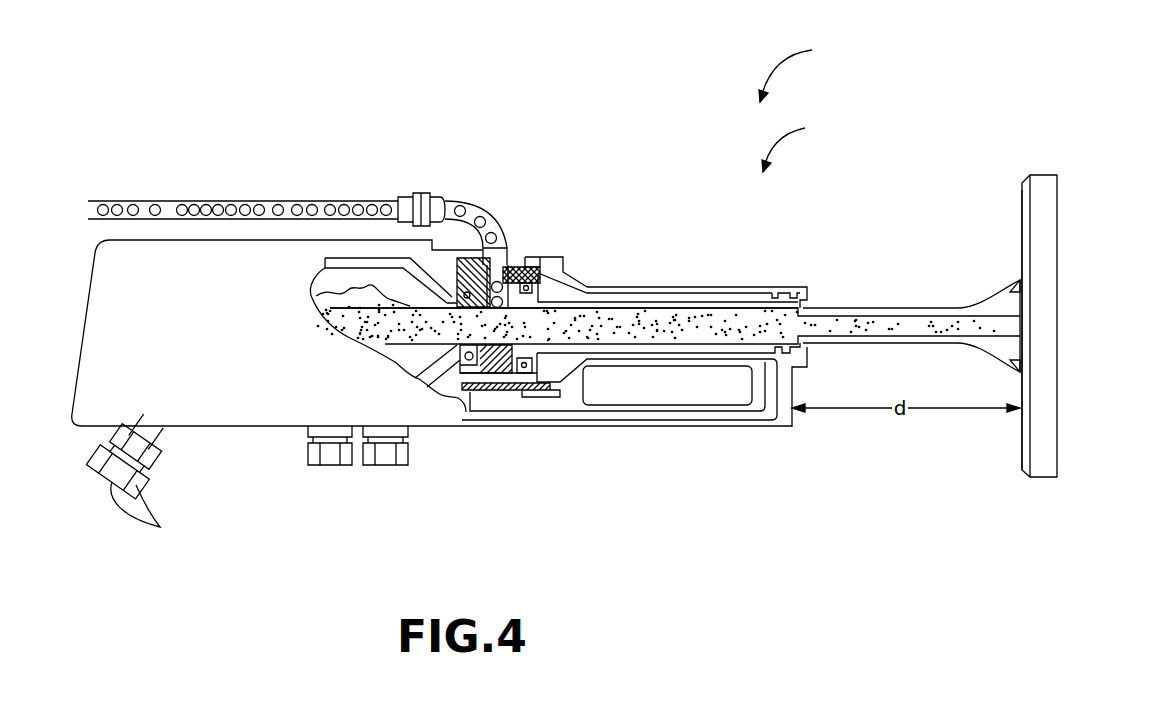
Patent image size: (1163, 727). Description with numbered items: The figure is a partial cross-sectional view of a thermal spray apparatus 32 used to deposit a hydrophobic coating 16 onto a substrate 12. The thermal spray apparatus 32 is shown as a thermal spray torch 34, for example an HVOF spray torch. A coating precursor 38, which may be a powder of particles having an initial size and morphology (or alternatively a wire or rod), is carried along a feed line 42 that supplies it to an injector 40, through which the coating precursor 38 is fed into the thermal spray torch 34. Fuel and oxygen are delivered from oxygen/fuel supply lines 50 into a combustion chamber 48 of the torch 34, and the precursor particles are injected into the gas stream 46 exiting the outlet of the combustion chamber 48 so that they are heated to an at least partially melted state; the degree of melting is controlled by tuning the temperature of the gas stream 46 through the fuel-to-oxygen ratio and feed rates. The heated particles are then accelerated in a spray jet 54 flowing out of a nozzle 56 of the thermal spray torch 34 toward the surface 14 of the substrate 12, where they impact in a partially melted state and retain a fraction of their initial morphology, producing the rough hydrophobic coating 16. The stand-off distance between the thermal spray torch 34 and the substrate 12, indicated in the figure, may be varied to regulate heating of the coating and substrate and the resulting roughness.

The substrate 12 is at (1057, 181).
The surface 14 is at (1026, 217).
The hydrophobic coating 16 is at (1022, 292).
The thermal spray apparatus 32 is at (798, 68).
The thermal spray torch 34 is at (796, 144).
The coating precursor 38 is at (155, 202).
The injector 40 is at (527, 280).
The feed line 42 is at (310, 202).
The gas stream 46 is at (435, 318).
The combustion chamber 48 is at (407, 348).
The oxygen/fuel supply lines 50 is at (135, 478).
The spray jet 54 is at (828, 315).
The nozzle 56 is at (710, 287).